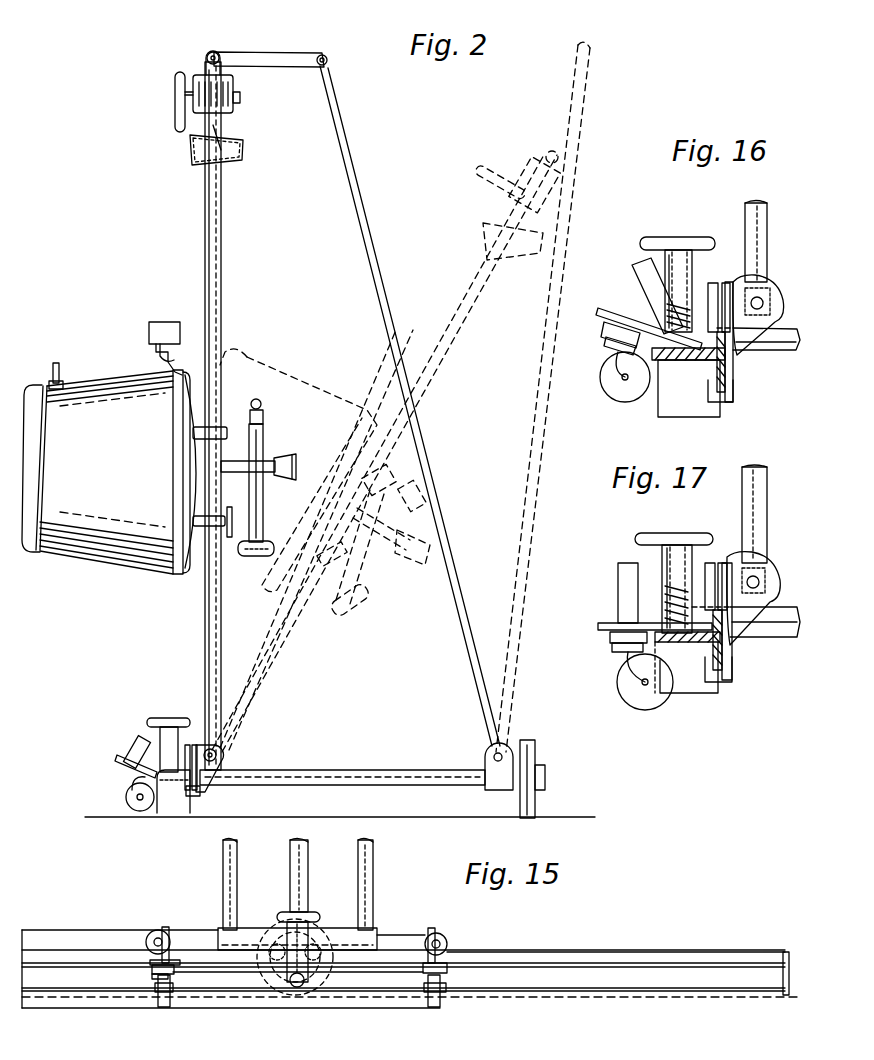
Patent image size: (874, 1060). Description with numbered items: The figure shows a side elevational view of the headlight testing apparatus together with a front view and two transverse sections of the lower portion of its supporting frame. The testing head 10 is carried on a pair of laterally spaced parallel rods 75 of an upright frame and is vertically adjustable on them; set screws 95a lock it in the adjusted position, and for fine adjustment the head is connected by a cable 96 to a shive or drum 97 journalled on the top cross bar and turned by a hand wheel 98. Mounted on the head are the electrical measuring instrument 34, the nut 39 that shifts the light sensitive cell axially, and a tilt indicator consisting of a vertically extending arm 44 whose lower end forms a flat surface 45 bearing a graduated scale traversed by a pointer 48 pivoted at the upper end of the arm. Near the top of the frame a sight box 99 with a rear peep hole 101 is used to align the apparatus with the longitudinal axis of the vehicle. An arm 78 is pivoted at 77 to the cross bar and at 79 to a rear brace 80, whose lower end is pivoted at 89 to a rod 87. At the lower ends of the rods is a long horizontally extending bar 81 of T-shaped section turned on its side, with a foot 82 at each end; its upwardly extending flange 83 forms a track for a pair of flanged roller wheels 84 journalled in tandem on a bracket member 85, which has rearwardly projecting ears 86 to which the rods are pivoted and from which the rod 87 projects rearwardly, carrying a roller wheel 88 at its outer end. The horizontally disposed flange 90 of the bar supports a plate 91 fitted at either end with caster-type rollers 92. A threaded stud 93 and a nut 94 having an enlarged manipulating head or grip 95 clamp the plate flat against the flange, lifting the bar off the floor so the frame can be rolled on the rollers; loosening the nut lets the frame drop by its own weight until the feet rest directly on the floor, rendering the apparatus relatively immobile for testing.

In FIG. 2, the testing head 10 is at (112, 370).
In FIG. 2, the electrical measuring instrument 34 is at (165, 322).
In FIG. 2, the nut 39 is at (291, 452).
In FIG. 2, the vertically extending arm 44 is at (268, 492).
In FIG. 2, the flat surface 45 is at (263, 410).
In FIG. 2, the pointer 48 is at (263, 518).
In FIG. 2, the rods 75 is at (205, 627).
In FIG. 16, the rods 75 is at (760, 228).
In FIG. 17, the rods 75 is at (755, 505).
In FIG. 15, the rods 75 is at (298, 884).
In FIG. 2, the pivot 77 is at (213, 52).
In FIG. 2, the arm 78 is at (272, 53).
In FIG. 2, the pivot 79 is at (330, 58).
In FIG. 2, the rear brace 80 is at (372, 245).
In FIG. 16, the horizontally extending bar 81 is at (690, 360).
In FIG. 17, the horizontally extending bar 81 is at (695, 642).
In FIG. 15, the horizontally extending bar 81 is at (97, 931).
In FIG. 2, the foot 82 is at (165, 805).
In FIG. 16, the foot 82 is at (695, 405).
In FIG. 17, the foot 82 is at (700, 685).
In FIG. 15, the foot 82 is at (795, 982).
In FIG. 16, the upwardly extending flange 83 is at (728, 345).
In FIG. 17, the upwardly extending flange 83 is at (732, 632).
In FIG. 15, the upwardly extending flange 83 is at (500, 951).
In FIG. 2, the flanged roller wheels 84 is at (190, 745).
In FIG. 16, the flanged roller wheels 84 is at (717, 290).
In FIG. 17, the flanged roller wheels 84 is at (716, 570).
In FIG. 15, the flanged roller wheels 84 is at (150, 932).
In FIG. 2, the bracket member 85 is at (200, 793).
In FIG. 16, the bracket member 85 is at (733, 378).
In FIG. 17, the bracket member 85 is at (732, 668).
In FIG. 15, the bracket member 85 is at (395, 935).
In FIG. 2, the ears 86 is at (222, 760).
In FIG. 16, the ears 86 is at (780, 285).
In FIG. 17, the ears 86 is at (772, 568).
In FIG. 2, the rod 87 is at (373, 785).
In FIG. 16, the rod 87 is at (780, 350).
In FIG. 17, the rod 87 is at (780, 637).
In FIG. 2, the roller wheel 88 is at (535, 800).
In FIG. 15, the roller wheel 88 is at (318, 925).
In FIG. 2, the pivot 89 is at (502, 754).
In FIG. 15, the horizontally disposed flange 90 is at (592, 968).
In FIG. 16, the plate 91 is at (601, 306).
In FIG. 17, the plate 91 is at (600, 625).
In FIG. 2, the caster-type rollers 92 is at (128, 800).
In FIG. 16, the caster-type rollers 92 is at (604, 385).
In FIG. 17, the caster-type rollers 92 is at (625, 690).
In FIG. 15, the caster-type rollers 92 is at (162, 1006).
In FIG. 16, the threaded stud 93 is at (664, 340).
In FIG. 17, the threaded stud 93 is at (682, 650).
In FIG. 16, the nut 94 is at (677, 262).
In FIG. 17, the nut 94 is at (672, 558).
In FIG. 2, the manipulating head or grip 95 is at (150, 718).
In FIG. 16, the manipulating head or grip 95 is at (683, 237).
In FIG. 17, the manipulating head or grip 95 is at (673, 533).
In FIG. 2, the set screws 95a is at (230, 537).
In FIG. 2, the cable 96 is at (216, 248).
In FIG. 2, the shive or drum 97 is at (222, 92).
In FIG. 2, the hand wheel 98 is at (177, 118).
In FIG. 2, the sight box 99 is at (226, 152).
In FIG. 2, the peep hole 101 is at (243, 148).